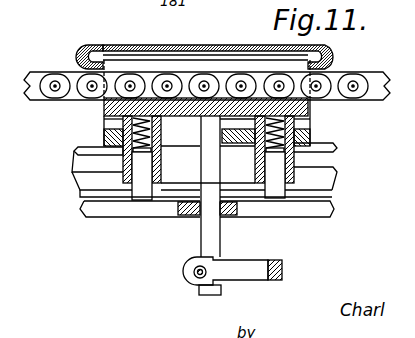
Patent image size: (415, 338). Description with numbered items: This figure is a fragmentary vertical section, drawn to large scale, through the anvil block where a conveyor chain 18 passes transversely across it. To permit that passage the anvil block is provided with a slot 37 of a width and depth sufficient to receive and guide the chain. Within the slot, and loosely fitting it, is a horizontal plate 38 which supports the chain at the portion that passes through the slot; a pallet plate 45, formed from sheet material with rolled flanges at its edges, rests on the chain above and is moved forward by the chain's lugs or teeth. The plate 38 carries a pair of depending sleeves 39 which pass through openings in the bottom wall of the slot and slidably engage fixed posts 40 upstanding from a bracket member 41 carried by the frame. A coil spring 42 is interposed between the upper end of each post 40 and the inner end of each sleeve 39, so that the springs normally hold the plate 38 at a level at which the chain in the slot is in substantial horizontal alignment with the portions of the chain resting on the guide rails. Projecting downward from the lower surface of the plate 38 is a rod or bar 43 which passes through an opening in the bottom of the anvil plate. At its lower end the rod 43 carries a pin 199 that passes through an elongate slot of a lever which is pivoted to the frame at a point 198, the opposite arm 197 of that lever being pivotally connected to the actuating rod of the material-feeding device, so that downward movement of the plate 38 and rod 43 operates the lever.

The chain 18 is at (62, 72).
The pallet plate 45 is at (204, 54).
The horizontal plate 38 is at (104, 110).
The slot 37 is at (310, 116).
The depending sleeve 39 is at (104, 122).
The coil spring 42 is at (123, 158).
The fixed post 40 is at (137, 184).
The bracket member 41 is at (117, 215).
The rod or bar 43 is at (202, 225).
The arm 197 is at (258, 251).
The pivot point 198 is at (212, 285).
The pin 199 is at (188, 278).